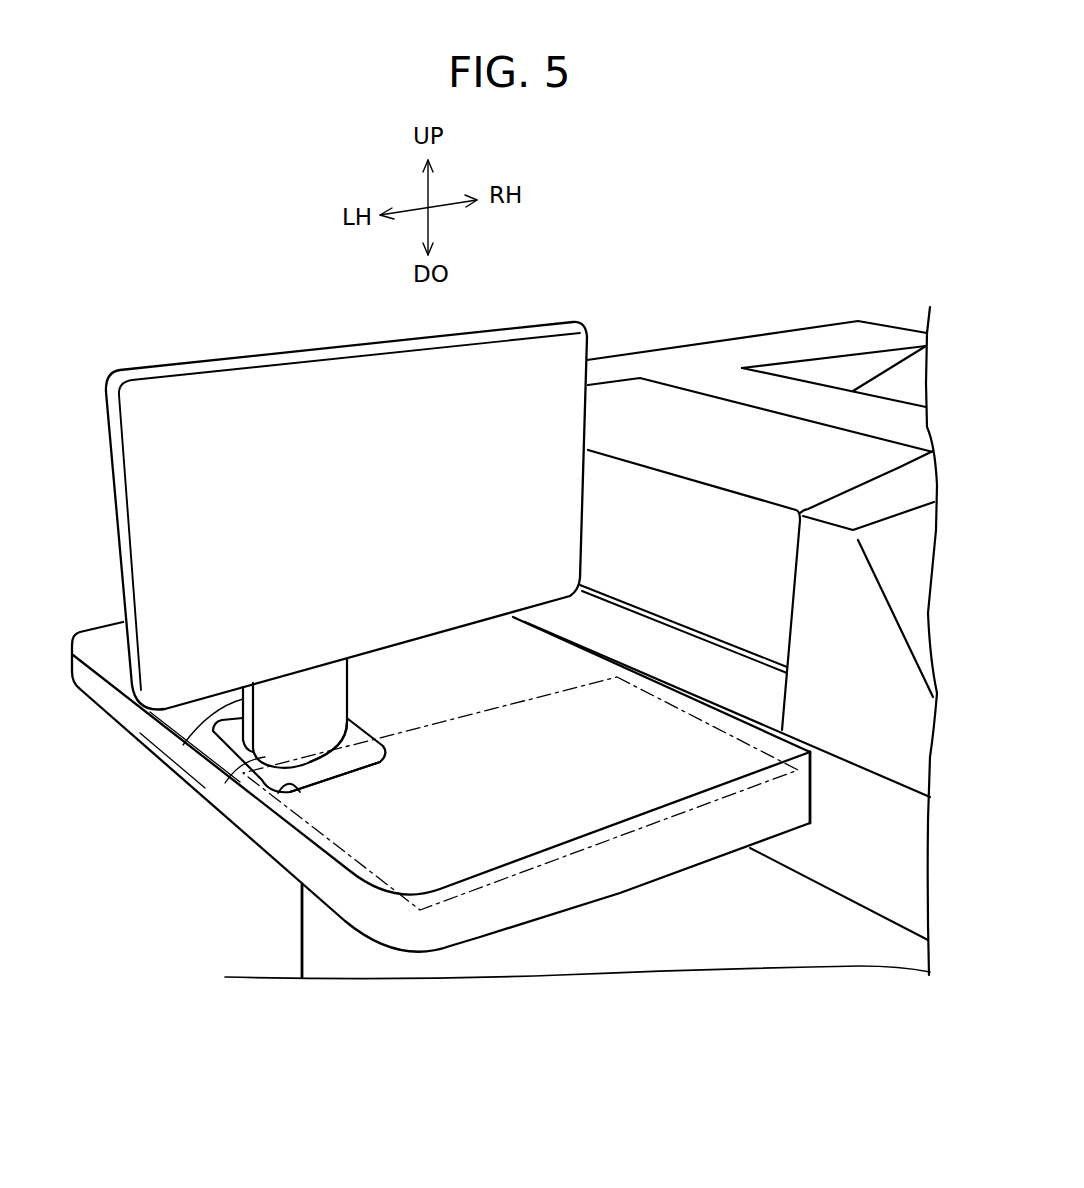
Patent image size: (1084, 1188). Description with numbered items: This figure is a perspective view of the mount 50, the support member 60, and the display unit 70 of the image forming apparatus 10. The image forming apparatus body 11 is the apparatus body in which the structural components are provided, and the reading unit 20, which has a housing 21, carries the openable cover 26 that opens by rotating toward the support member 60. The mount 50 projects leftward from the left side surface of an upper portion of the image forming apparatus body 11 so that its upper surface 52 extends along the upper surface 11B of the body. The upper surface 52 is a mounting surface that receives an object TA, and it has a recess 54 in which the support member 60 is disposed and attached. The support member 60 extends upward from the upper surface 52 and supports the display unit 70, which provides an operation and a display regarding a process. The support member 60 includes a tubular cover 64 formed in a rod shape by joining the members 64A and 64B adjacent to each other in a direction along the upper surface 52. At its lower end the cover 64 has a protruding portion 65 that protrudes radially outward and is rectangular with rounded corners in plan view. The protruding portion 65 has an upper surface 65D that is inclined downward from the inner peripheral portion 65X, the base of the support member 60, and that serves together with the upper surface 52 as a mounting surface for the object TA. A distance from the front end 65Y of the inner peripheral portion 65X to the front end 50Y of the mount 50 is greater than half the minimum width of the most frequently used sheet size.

The image forming apparatus 10 is at (870, 200).
The image forming apparatus body 11 is at (870, 767).
The upper surface of the image forming apparatus body 11B is at (832, 750).
The reading unit 20 is at (708, 342).
The housing 21 is at (658, 352).
The openable cover 26 is at (623, 407).
The mount 50 is at (610, 895).
The front end of the mount 50Y is at (454, 921).
The upper surface of the mount 52 is at (555, 657).
The recess 54 is at (276, 786).
The support member 60 is at (354, 682).
The cover 64 is at (95, 767).
The member 64A is at (190, 741).
The member 64B is at (227, 758).
The protruding portion 65 is at (205, 800).
The upper surface of the protruding portion 65D is at (380, 755).
The inner peripheral portion 65X is at (352, 737).
The front end of the inner peripheral portion 65Y is at (322, 766).
The display unit 70 is at (202, 361).
The object TA is at (683, 818).